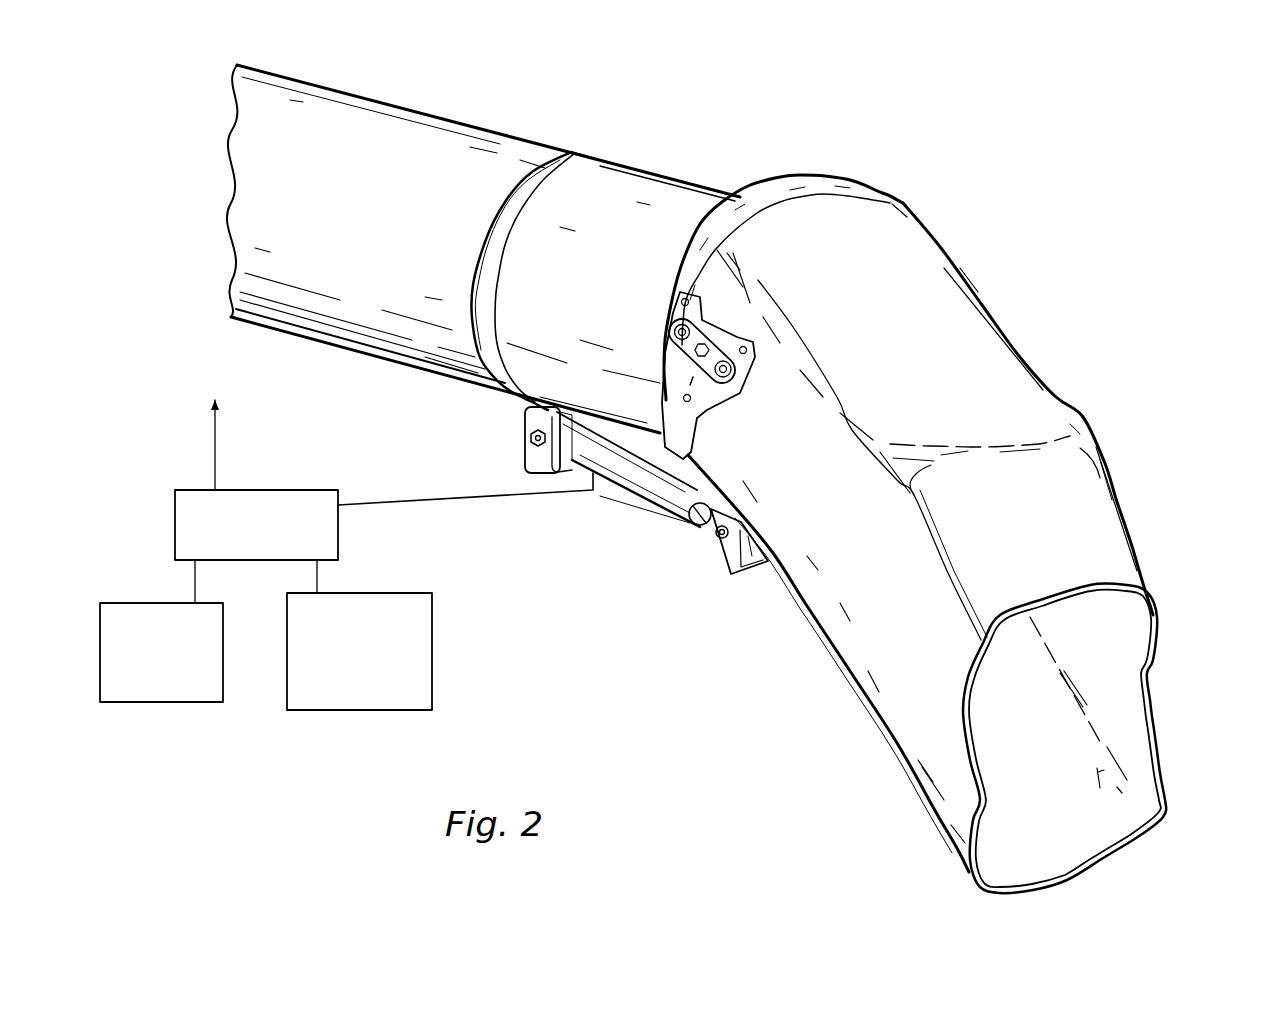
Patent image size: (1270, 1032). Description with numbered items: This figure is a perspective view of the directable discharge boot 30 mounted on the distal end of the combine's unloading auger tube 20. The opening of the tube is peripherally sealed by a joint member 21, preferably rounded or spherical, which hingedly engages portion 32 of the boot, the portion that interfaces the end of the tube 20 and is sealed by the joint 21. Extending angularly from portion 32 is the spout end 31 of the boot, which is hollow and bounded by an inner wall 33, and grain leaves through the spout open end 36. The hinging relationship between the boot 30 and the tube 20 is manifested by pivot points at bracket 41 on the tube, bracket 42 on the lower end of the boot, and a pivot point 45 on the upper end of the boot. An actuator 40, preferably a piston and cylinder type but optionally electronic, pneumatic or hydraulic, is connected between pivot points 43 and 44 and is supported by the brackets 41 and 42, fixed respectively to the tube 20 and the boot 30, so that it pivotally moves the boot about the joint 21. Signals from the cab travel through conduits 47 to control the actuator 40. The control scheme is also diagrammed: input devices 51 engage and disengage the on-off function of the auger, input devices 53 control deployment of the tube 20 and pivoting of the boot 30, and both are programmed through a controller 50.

The unloading auger tube 20 is at (443, 113).
The joint member 21 is at (780, 182).
The discharge boot 30 is at (1135, 425).
The spout end 31 is at (1100, 527).
The portion of boot interfacing tube 32 is at (1016, 327).
The inner wall 33 is at (1137, 728).
The spout open end 36 is at (1077, 815).
The actuator 40 is at (627, 493).
The bracket on tube 41 is at (523, 458).
The bracket on boot 42 is at (727, 567).
The pivot point 43 is at (527, 435).
The pivot point 44 is at (713, 533).
The upper pivot point 45 is at (668, 358).
The conduits 47 is at (423, 505).
The controller 50 is at (270, 490).
The input device for auger on-off 51 is at (162, 702).
The input device for tube and boot 53 is at (368, 712).